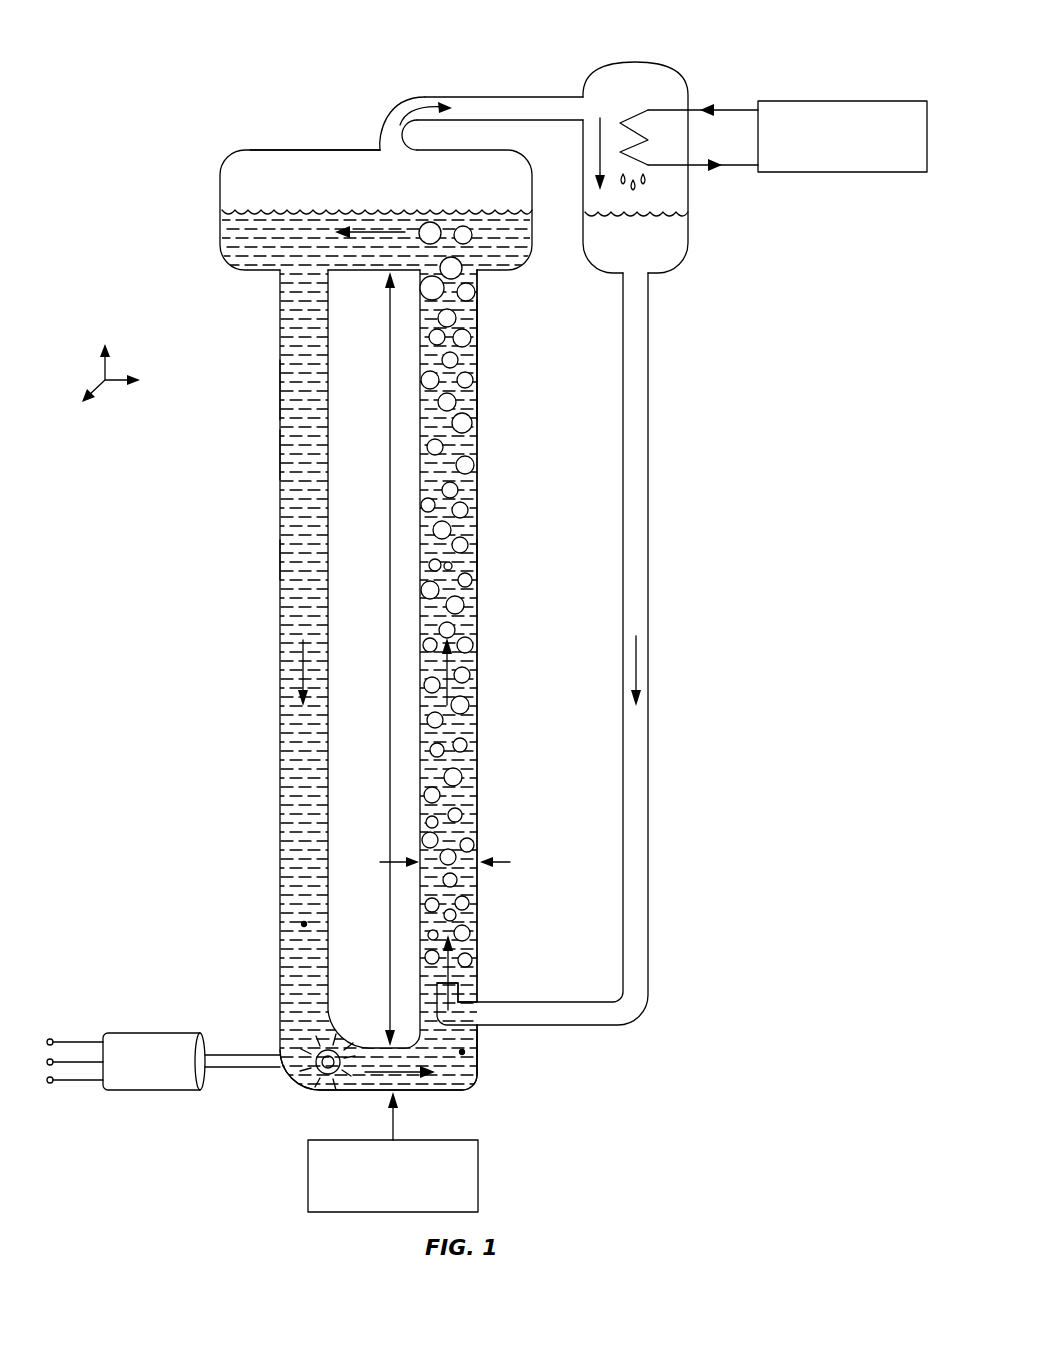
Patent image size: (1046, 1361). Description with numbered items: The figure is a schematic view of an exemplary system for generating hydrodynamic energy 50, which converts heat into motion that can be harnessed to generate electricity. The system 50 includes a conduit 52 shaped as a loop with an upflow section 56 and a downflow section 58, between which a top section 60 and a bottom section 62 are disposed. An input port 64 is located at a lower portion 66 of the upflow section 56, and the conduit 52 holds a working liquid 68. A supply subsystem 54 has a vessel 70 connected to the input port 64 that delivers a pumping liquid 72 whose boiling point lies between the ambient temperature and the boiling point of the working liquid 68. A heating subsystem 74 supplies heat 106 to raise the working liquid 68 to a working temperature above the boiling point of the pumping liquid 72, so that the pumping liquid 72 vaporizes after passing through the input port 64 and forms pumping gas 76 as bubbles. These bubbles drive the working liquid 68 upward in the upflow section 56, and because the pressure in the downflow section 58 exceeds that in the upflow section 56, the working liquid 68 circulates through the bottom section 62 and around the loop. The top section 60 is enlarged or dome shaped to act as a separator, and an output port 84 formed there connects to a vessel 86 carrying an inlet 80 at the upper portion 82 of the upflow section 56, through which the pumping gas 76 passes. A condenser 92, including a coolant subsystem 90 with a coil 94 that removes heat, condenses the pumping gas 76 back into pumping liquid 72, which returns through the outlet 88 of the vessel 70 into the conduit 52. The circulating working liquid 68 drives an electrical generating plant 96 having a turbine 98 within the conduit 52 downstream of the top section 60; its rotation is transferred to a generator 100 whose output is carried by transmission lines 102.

The system for generating hydrodynamic energy 50 is at (202, 114).
The conduit 52 is at (280, 455).
The supply subsystem 54 is at (623, 62).
The upflow section 56 is at (478, 602).
The downflow section 58 is at (280, 398).
The top section 60 is at (220, 178).
The bottom section 62 is at (478, 1082).
The input port 64 is at (480, 1002).
The lower portion 66 is at (480, 1040).
The working liquid 68 is at (240, 247).
The vessel 70 is at (650, 826).
The pumping liquid 72 is at (652, 180).
The heating subsystem 74 is at (478, 1175).
The pumping gas 76 is at (293, 158).
The inlet 80 is at (412, 142).
The upper portion 82 is at (480, 376).
The output port 84 is at (375, 150).
The vessel 86 is at (530, 97).
The outlet 88 is at (436, 990).
The coolant subsystem 90 is at (832, 73).
The condenser 92 is at (862, 100).
The coil 94 is at (640, 110).
The electrical generating plant 96 is at (104, 1098).
The turbine 98 is at (323, 1082).
The generator 100 is at (176, 1033).
The transmission lines 102 is at (64, 1032).
The heat 106 is at (395, 1128).